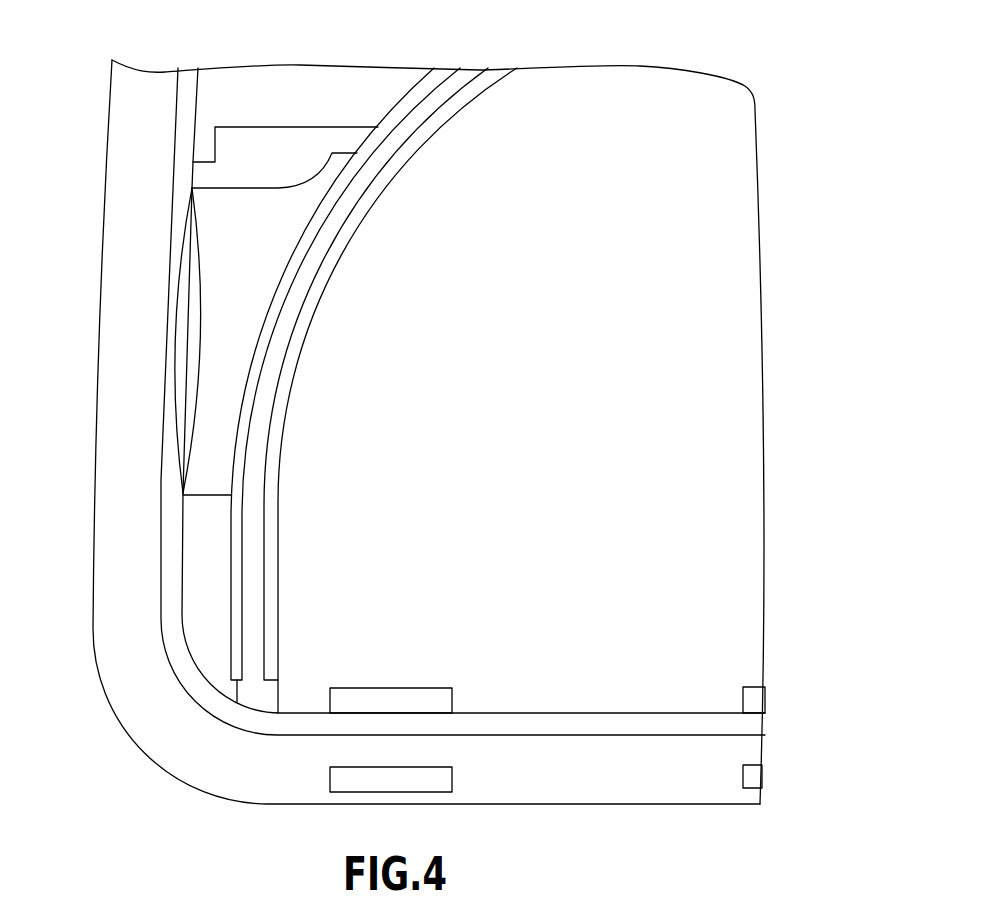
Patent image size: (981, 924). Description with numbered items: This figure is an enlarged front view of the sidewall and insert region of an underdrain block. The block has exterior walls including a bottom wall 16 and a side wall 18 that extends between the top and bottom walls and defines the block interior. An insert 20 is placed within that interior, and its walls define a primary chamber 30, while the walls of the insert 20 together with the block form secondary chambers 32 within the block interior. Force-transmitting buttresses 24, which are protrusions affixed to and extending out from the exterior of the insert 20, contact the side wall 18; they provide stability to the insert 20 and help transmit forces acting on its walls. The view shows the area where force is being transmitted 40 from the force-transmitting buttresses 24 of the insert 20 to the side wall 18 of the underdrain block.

The bottom wall 16 is at (538, 790).
The side wall 18 is at (115, 252).
The insert 20 is at (402, 363).
The force-transmitting buttresses 24 is at (260, 253).
The primary chamber 30 is at (553, 412).
The secondary chambers 32 is at (273, 157).
The area where force is being transmitted 40 is at (200, 258).